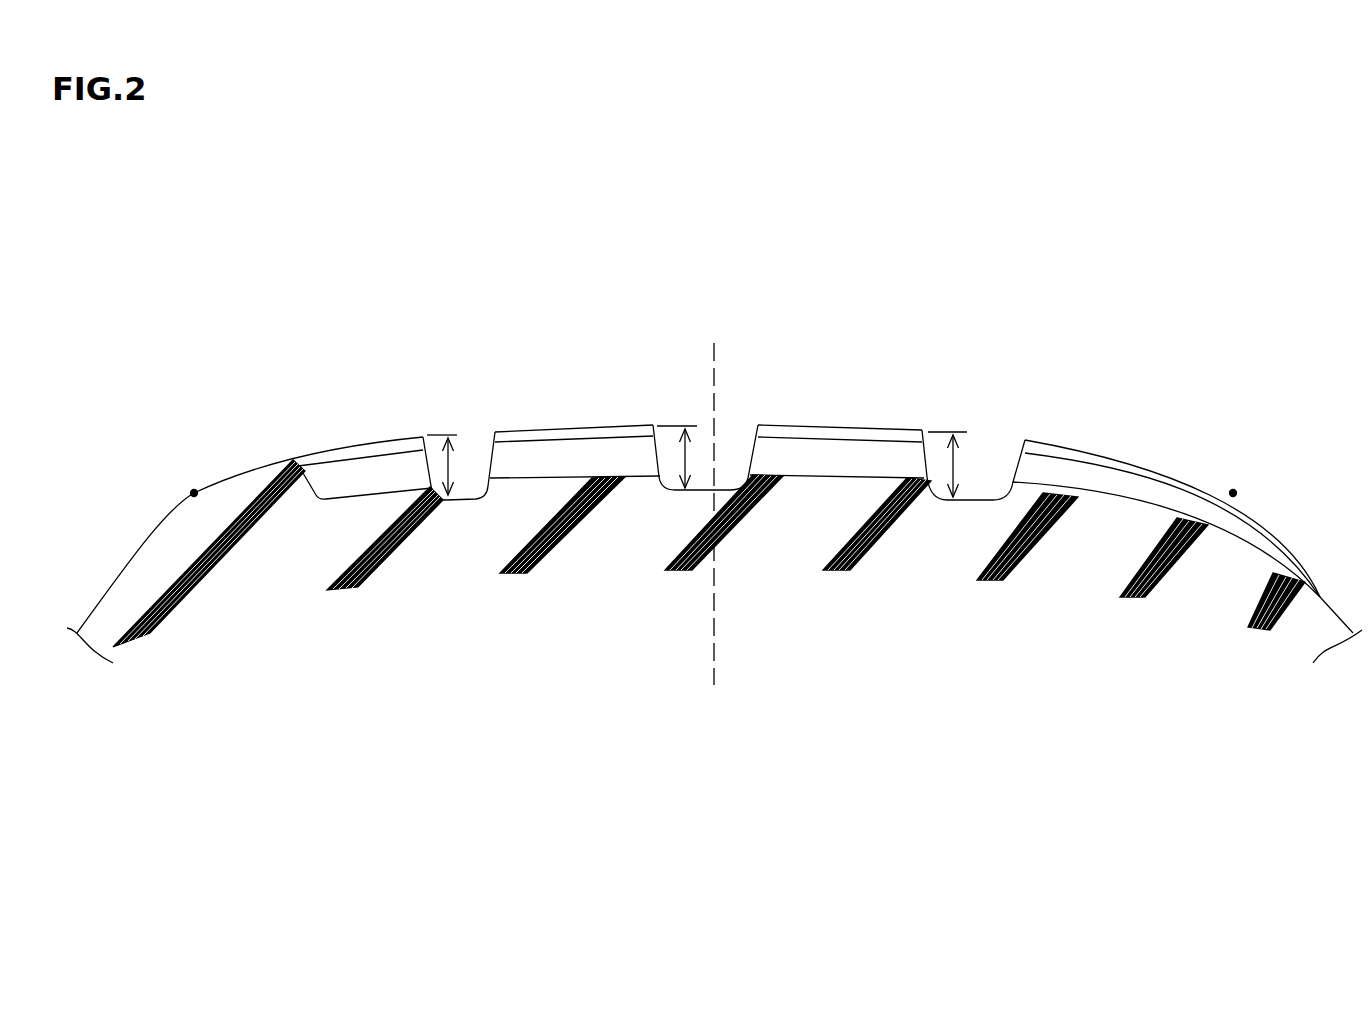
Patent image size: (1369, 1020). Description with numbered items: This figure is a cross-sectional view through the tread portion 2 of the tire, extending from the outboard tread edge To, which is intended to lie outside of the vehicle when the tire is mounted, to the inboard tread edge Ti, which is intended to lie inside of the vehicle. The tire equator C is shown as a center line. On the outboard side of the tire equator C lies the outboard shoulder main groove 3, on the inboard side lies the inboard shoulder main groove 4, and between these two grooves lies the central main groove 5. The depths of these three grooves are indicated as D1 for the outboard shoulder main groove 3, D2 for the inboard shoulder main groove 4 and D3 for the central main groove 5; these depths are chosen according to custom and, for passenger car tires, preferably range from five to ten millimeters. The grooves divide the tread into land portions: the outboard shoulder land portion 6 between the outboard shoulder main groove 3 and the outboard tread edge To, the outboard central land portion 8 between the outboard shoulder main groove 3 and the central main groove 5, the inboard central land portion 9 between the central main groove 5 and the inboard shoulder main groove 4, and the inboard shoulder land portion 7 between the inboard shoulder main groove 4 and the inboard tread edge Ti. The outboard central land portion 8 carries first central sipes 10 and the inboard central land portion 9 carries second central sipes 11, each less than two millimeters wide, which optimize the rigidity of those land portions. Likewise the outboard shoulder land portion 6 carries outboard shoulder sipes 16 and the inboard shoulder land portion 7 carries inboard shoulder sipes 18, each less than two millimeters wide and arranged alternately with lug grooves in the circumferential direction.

The tread portion 2 is at (714, 434).
The outboard shoulder main groove 3 is at (475, 430).
The inboard shoulder main groove 4 is at (997, 440).
The central main groove 5 is at (735, 432).
The outboard shoulder land portion 6 is at (249, 488).
The inboard shoulder land portion 7 is at (1169, 476).
The outboard central land portion 8 is at (493, 429).
The inboard central land portion 9 is at (798, 419).
The first central sipes 10 is at (600, 460).
The second central sipes 11 is at (868, 460).
The outboard shoulder sipes 16 is at (368, 470).
The inboard shoulder sipes 18 is at (1142, 483).
The depth of the outboard shoulder main groove D1 is at (455, 463).
The depth of the inboard shoulder main groove D2 is at (970, 462).
The depth of the central main groove D3 is at (687, 457).
The tire equator C is at (715, 500).
The outboard tread edge To is at (194, 493).
The inboard tread edge Ti is at (1233, 493).